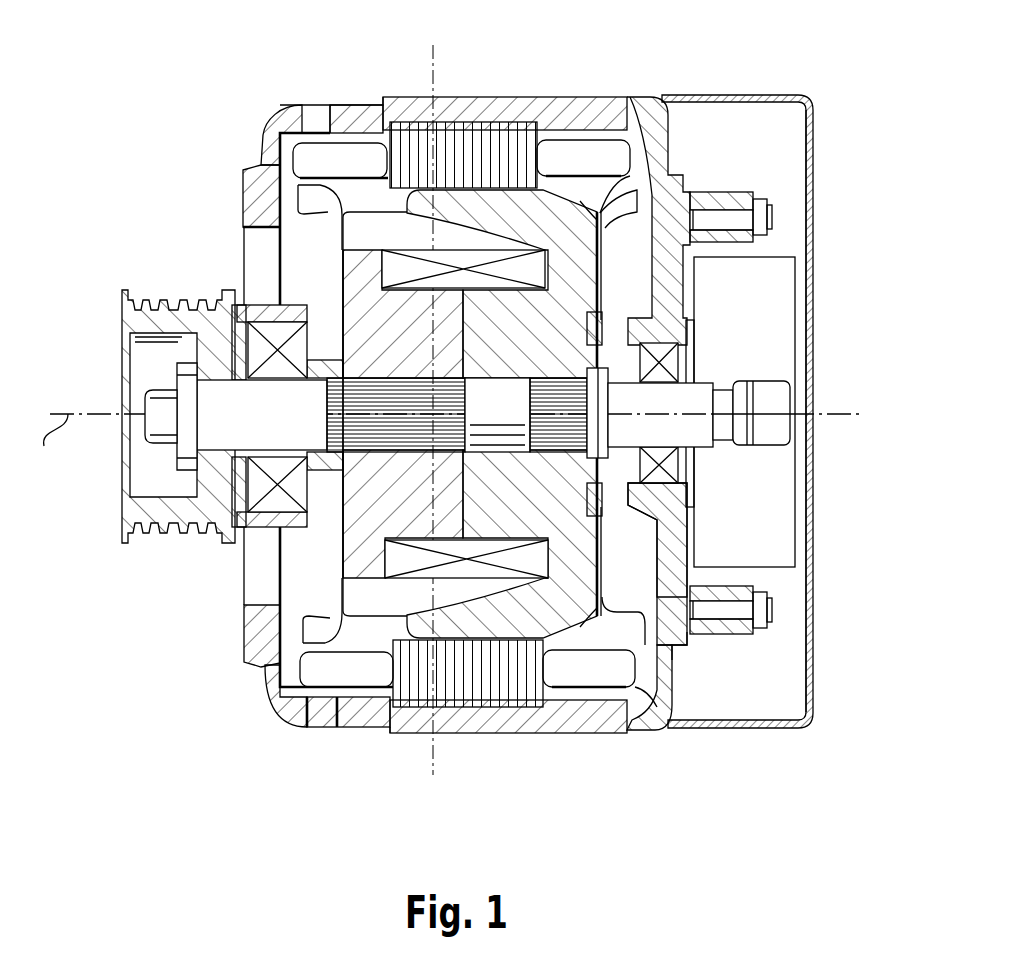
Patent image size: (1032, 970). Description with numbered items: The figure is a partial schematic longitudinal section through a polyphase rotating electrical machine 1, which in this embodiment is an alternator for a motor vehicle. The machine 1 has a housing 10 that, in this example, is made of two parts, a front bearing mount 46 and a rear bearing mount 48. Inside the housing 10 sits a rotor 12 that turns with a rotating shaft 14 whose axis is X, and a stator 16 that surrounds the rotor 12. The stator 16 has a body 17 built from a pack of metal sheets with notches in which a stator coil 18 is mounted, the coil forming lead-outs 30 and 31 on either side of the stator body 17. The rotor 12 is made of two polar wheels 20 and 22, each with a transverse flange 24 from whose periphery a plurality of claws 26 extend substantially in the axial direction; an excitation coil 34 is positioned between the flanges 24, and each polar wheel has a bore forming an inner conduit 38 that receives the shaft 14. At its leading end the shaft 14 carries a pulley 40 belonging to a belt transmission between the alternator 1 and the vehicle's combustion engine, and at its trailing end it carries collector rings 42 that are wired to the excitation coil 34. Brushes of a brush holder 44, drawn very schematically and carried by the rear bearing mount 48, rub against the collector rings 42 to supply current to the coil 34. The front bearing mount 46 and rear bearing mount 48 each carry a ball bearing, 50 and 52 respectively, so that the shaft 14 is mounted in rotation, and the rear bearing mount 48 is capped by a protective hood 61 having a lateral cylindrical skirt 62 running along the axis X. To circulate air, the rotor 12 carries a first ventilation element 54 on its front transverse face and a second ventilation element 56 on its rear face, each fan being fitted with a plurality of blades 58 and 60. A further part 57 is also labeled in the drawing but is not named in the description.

The polyphase rotating electrical machine 1 is at (150, 655).
The housing 10 is at (278, 100).
The rotor 12 is at (367, 195).
The rotating shaft 14 is at (736, 366).
The stator 16 is at (493, 133).
The body 17 is at (465, 165).
The stator coil 18 is at (570, 155).
The polar wheel 20 is at (328, 562).
The polar wheel 22 is at (616, 563).
The transverse flange 24 is at (355, 290).
The claws 26 is at (596, 189).
The lead-out 30 is at (607, 665).
The lead-out 31 is at (313, 673).
The excitation coil 34 is at (398, 563).
The inner conduit 38 is at (375, 393).
The pulley 40 is at (158, 332).
The collector rings 42 is at (770, 407).
The brush holder 44 is at (760, 300).
The front bearing mount 46 is at (286, 190).
The rear bearing mount 48 is at (672, 507).
The ball bearing 50 is at (260, 480).
The ball bearing 52 is at (670, 467).
The first ventilation element 54 is at (265, 195).
The second ventilation element 56 is at (645, 656).
The bearing plate 57 is at (697, 347).
The blades 58 is at (315, 218).
The blades 60 is at (692, 647).
The protective hood 61 is at (812, 232).
The lateral cylindrical skirt 62 is at (737, 95).